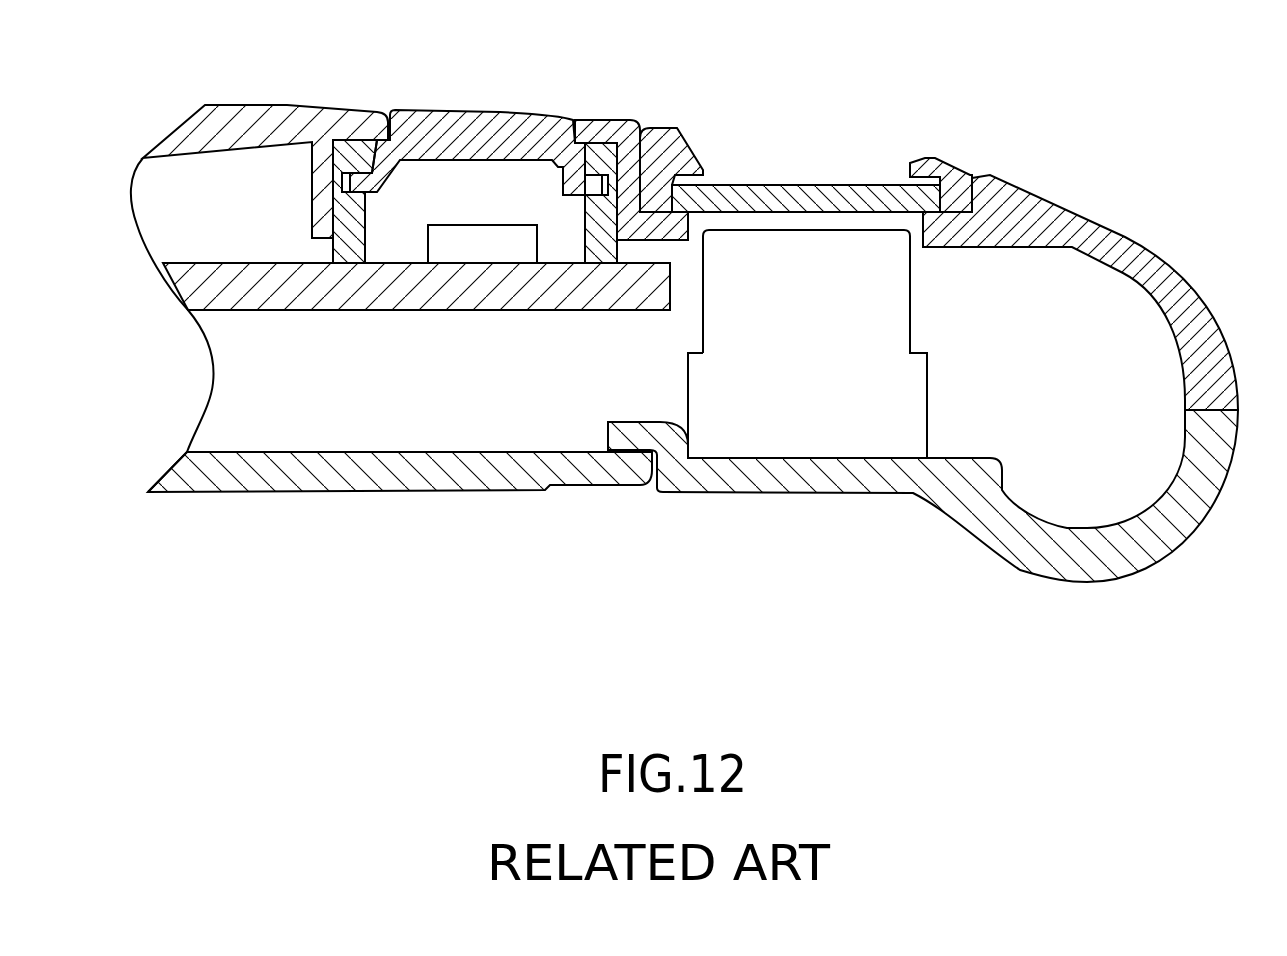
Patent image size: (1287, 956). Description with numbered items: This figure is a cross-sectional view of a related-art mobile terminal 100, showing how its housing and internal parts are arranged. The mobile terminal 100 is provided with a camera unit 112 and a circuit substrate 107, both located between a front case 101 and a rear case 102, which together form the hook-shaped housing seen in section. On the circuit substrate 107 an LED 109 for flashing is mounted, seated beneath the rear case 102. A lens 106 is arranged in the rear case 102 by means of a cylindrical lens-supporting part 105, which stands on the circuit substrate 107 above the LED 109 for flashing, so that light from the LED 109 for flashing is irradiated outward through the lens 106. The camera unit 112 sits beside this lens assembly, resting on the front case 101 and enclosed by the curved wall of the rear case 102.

The mobile terminal 100 is at (684, 383).
The front case 101 is at (1152, 560).
The rear case 102 is at (1124, 238).
The cylindrical lens-supporting part 105 is at (332, 142).
The lens 106 is at (572, 147).
The circuit substrate 107 is at (318, 298).
The LED for flashing 109 is at (492, 243).
The camera unit 112 is at (910, 300).